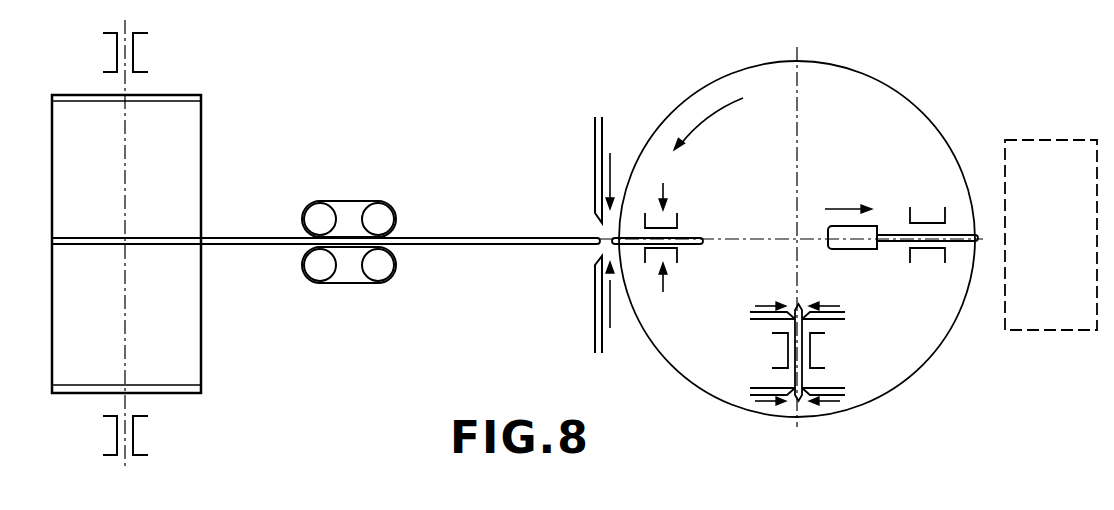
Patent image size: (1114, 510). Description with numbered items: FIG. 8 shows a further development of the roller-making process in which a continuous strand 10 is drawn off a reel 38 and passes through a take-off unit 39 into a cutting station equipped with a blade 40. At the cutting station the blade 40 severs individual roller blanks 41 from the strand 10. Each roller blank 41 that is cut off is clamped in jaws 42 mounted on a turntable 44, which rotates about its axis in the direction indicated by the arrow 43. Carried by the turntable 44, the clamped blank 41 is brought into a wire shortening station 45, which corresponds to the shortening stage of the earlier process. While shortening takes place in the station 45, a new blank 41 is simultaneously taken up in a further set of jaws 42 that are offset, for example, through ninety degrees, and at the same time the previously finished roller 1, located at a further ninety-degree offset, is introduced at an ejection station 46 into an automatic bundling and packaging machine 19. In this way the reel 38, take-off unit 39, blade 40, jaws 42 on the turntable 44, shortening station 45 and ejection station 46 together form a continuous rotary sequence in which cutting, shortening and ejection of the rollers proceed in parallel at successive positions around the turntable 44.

The cut strip piece / product 1 is at (901, 227).
The strand 10 is at (228, 237).
The automatic bundling and packaging machine 19 is at (1038, 152).
The reel 38 is at (193, 133).
The take-off unit 39 is at (350, 202).
The blade 40 is at (598, 178).
The roller blank 41 is at (695, 233).
The jaws 42 is at (668, 215).
The arrow 43 is at (752, 93).
The turntable 44 is at (868, 98).
The wire shortening station 45 is at (810, 350).
The ejection station 46 is at (846, 243).